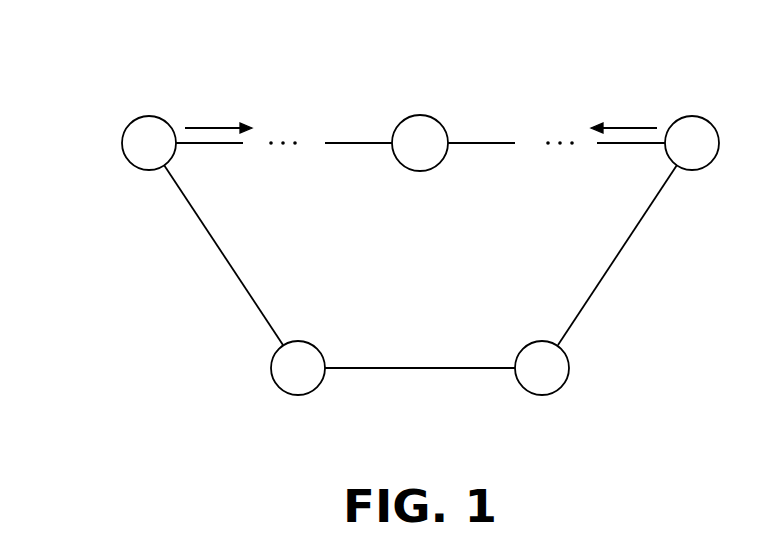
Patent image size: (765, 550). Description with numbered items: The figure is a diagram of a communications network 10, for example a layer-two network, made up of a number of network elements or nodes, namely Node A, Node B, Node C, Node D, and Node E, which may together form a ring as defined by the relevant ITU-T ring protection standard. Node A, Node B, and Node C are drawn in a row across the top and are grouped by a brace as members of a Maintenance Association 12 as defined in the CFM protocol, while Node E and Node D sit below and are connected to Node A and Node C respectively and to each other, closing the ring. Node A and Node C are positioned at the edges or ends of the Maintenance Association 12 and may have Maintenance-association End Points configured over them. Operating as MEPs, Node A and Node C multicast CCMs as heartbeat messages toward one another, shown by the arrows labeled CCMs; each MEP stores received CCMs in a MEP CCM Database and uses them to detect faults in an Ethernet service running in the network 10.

The communications network 10 is at (110, 254).
The Maintenance Association 12 is at (720, 78).
The Node A is at (149, 143).
The Node B is at (420, 143).
The Node C is at (692, 143).
The Node D is at (542, 368).
The Node E is at (298, 368).